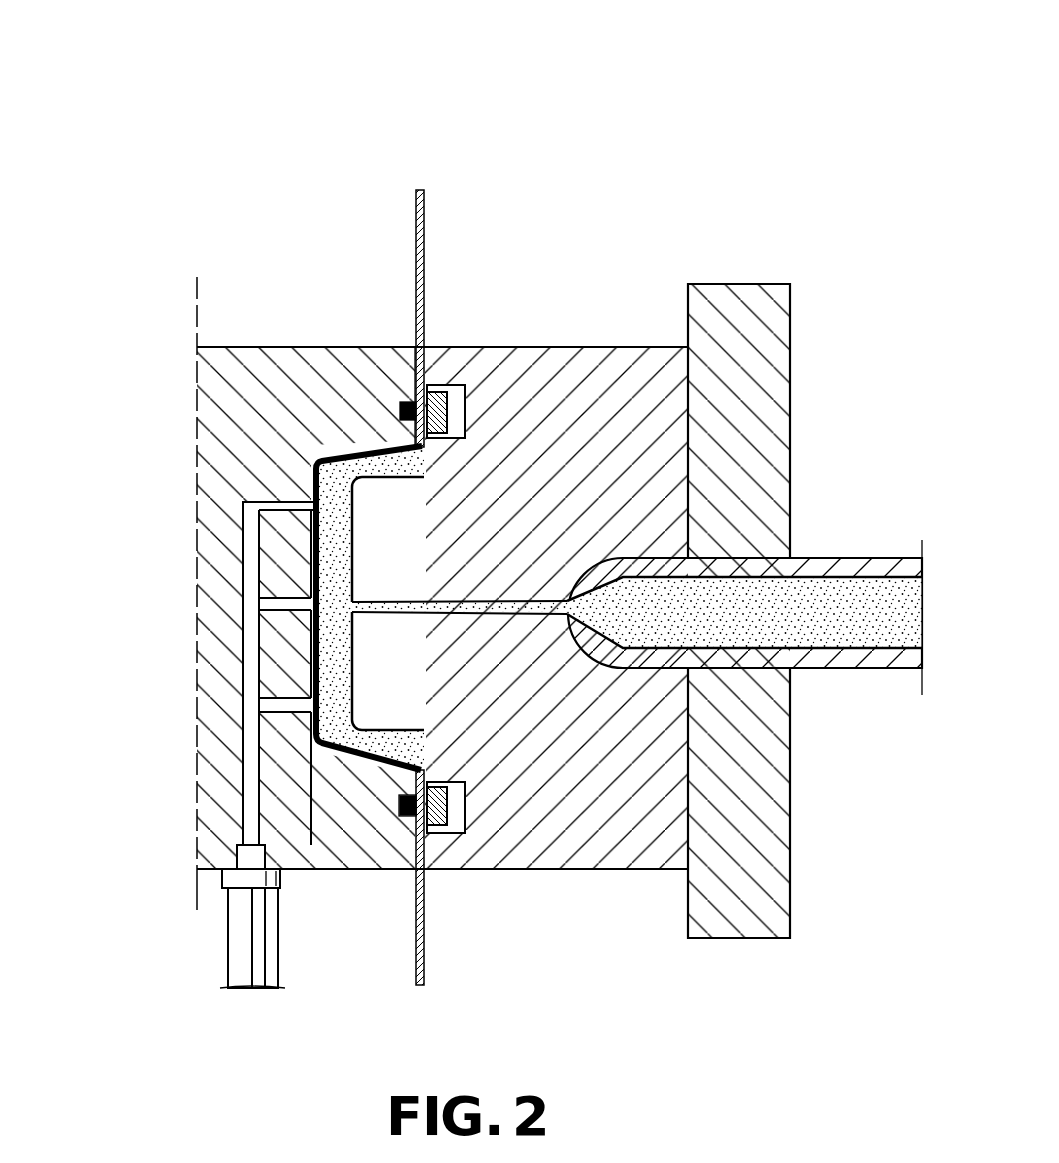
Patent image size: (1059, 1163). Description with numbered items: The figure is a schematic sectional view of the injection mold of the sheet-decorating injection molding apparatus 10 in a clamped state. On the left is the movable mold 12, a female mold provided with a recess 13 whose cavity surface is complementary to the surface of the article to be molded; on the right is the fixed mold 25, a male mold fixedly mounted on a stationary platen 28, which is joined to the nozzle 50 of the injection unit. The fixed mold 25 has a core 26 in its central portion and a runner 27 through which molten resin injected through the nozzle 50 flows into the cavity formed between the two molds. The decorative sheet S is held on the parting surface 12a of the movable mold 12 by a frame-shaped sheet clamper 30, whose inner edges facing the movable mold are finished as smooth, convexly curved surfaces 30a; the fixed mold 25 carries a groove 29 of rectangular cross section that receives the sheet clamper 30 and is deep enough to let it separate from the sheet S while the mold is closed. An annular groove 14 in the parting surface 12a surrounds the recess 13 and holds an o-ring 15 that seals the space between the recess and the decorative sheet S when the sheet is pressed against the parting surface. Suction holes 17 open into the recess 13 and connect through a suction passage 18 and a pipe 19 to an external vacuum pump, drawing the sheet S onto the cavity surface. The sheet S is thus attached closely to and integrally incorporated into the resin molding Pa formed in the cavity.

The sheet-decorating injection molding apparatus 10 is at (340, 103).
The movable mold 12 is at (270, 343).
The parting surface 12a is at (428, 400).
The recess 13 is at (316, 478).
The annular groove 14 is at (410, 800).
The o-ring 15 is at (405, 402).
The suction holes 17 is at (287, 707).
The suction passage 18 is at (245, 772).
The pipe 19 is at (242, 945).
The fixed mold 25 is at (596, 343).
The core 26 is at (375, 707).
The runner 27 is at (507, 614).
The stationary platen 28 is at (725, 297).
The groove 29 is at (462, 405).
The sheet clamper 30 is at (445, 395).
The convexly curved surface 30a is at (430, 447).
The nozzle 50 is at (862, 668).
The decorative sheet S is at (418, 225).
The resin molding Pa is at (333, 553).